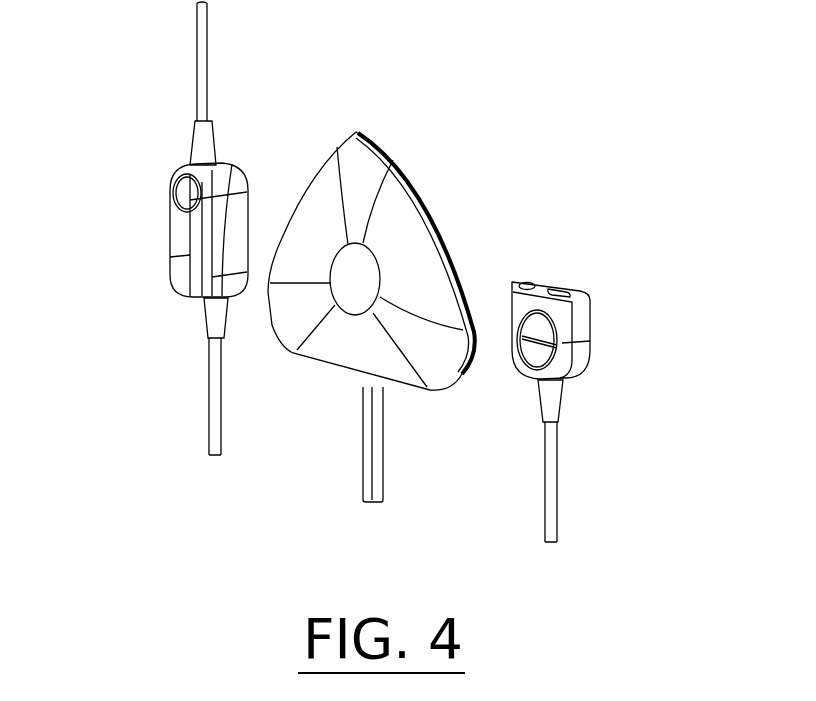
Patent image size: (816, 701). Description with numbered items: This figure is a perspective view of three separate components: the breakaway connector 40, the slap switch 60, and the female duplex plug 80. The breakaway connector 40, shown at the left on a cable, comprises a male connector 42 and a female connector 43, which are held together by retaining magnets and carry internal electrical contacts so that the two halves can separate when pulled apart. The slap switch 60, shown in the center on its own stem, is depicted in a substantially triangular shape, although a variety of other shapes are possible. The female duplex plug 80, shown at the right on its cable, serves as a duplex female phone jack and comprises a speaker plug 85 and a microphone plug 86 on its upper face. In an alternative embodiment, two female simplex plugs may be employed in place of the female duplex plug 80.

The breakaway connector 40 is at (189, 228).
The male connector 42 is at (175, 222).
The female connector 43 is at (240, 233).
The slap switch 60 is at (420, 158).
The female duplex plug 80 is at (584, 367).
The speaker plug 85 is at (530, 280).
The microphone plug 86 is at (562, 287).